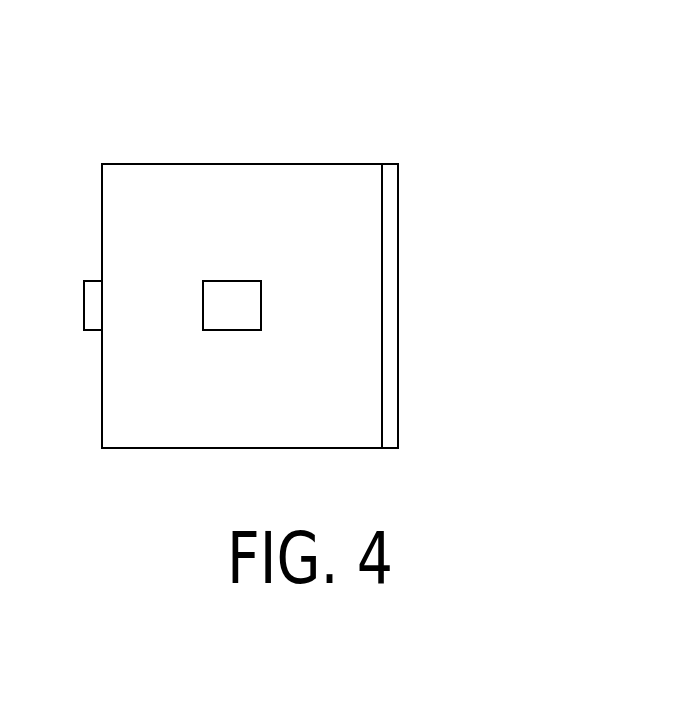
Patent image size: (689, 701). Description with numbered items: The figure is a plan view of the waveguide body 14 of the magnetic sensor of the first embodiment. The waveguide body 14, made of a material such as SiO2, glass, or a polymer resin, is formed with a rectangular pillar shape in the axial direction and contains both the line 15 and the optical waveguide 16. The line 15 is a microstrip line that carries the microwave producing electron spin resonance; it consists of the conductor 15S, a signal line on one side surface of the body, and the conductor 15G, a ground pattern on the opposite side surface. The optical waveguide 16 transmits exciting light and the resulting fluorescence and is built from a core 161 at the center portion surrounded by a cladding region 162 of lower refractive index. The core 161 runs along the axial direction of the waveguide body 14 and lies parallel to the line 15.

The waveguide body 14 is at (303, 183).
The line 15 is at (307, 245).
The conductor 15S is at (93, 280).
The conductor 15G is at (393, 227).
The optical waveguide 16 is at (126, 73).
The core 161 is at (220, 300).
The cladding region 162 is at (164, 213).